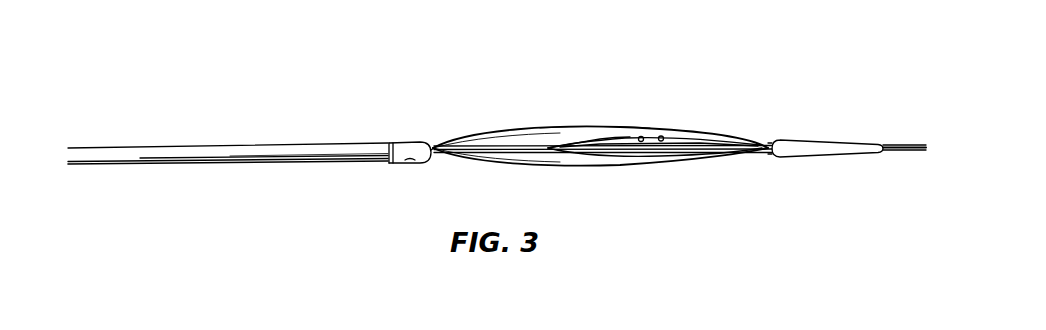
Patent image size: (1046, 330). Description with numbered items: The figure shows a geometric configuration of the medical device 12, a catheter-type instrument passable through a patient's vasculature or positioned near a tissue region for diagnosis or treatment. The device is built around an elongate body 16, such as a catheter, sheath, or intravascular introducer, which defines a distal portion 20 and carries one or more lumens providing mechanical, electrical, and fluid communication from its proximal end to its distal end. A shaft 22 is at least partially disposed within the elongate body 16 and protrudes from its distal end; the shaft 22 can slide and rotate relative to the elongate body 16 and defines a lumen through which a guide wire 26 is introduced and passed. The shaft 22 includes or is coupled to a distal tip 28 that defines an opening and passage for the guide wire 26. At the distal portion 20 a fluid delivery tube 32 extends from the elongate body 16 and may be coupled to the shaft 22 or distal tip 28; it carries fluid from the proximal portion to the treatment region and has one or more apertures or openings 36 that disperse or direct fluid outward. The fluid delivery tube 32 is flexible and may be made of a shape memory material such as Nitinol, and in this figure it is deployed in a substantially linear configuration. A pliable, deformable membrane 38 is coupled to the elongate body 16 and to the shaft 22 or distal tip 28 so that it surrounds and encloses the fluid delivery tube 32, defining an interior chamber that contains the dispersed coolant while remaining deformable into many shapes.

The medical device 12 is at (166, 79).
The elongate body 16 is at (280, 147).
The distal portion 20 is at (408, 144).
The shaft 22 is at (487, 147).
The guide wire 26 is at (908, 146).
The distal tip 28 is at (796, 150).
The fluid delivery tube 32 is at (694, 140).
The apertures or openings 36 is at (590, 151).
The membrane 38 is at (570, 127).